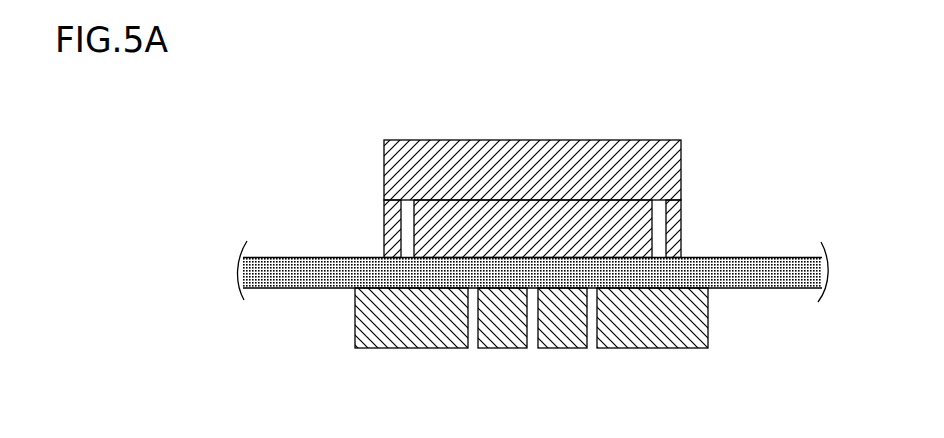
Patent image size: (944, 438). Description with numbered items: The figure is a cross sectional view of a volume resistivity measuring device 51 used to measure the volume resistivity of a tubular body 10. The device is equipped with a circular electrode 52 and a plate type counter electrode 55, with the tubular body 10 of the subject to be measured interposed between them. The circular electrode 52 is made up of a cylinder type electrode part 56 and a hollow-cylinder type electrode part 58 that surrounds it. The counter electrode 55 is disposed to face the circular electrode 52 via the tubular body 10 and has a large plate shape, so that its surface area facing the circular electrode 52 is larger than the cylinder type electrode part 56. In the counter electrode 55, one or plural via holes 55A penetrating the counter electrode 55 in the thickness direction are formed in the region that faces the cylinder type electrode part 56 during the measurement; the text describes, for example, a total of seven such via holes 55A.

The tubular body 10 is at (776, 257).
The volume resistivity measuring device 51 is at (595, 144).
The circular electrode 52 is at (585, 139).
The cylinder type electrode part 56 is at (616, 212).
The hollow-cylinder type electrode part 58 is at (683, 215).
The counter electrode 55 is at (645, 337).
The via holes 55A is at (588, 342).